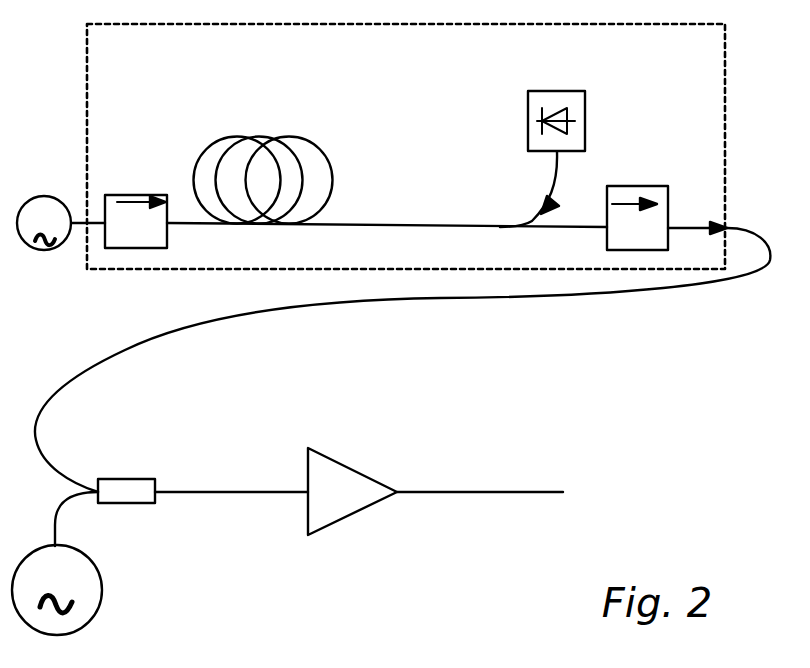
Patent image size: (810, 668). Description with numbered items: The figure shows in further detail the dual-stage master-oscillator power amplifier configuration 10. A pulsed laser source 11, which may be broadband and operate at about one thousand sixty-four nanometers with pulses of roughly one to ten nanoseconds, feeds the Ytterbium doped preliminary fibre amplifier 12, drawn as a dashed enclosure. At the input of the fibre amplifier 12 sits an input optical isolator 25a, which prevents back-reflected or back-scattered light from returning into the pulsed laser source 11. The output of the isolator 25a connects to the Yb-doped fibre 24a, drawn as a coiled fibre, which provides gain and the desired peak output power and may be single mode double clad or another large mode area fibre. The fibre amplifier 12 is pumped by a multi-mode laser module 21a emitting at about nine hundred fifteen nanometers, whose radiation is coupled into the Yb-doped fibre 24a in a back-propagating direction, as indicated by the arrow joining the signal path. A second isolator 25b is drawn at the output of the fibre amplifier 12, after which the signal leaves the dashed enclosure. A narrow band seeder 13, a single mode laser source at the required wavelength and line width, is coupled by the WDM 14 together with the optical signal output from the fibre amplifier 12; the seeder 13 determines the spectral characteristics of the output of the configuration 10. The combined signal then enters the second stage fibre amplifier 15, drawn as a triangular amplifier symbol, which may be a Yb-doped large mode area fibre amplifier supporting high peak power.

The dual-stage master-oscillator power amplifier (MOPA) configuration 10 is at (400, 534).
The pulsed laser source 11 is at (61, 223).
The Ytterbium (Yb) doped preliminary fibre amplifier 12 is at (112, 25).
The narrow band seeder 13 is at (57, 590).
The WDM 14 is at (122, 478).
The second stage fibre amplifier 15 is at (352, 491).
The multi-mode laser module 21a is at (528, 120).
The Yb-doped fibre 24a is at (323, 148).
The input optical isolator 25a is at (136, 221).
The optical isolator 25b is at (637, 218).